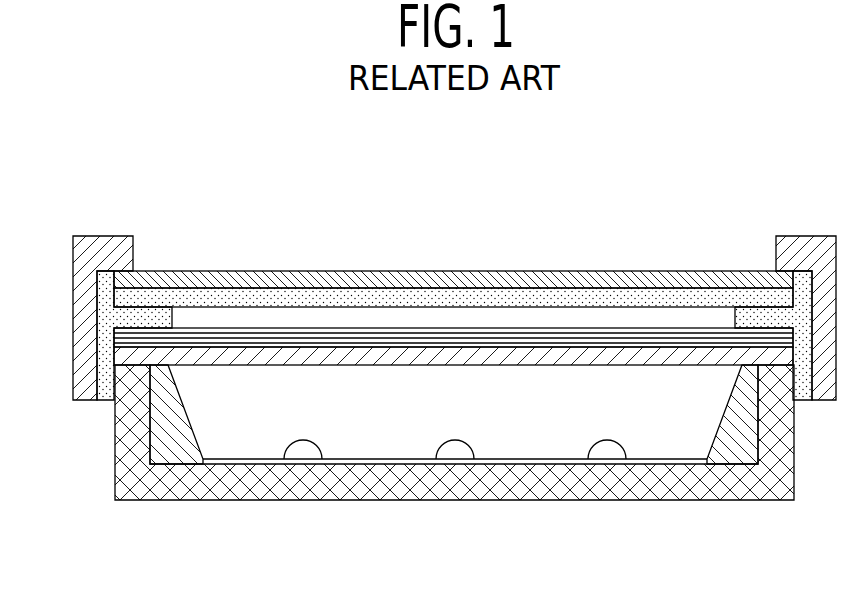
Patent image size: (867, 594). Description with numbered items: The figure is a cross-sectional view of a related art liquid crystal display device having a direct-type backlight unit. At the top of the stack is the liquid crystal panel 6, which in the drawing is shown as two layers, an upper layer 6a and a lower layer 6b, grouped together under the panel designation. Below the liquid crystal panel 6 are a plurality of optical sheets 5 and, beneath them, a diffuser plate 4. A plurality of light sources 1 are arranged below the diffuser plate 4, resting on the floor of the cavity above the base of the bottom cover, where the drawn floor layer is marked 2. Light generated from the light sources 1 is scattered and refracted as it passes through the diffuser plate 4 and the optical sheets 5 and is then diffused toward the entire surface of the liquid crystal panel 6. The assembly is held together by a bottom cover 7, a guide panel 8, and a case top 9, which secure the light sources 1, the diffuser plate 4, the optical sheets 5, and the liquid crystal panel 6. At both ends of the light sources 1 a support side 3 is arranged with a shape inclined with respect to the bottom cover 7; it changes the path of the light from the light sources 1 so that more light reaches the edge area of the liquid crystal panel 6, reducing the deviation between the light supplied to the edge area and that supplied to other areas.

The light source 1 is at (305, 450).
The substrate 2 is at (400, 464).
The support side 3 is at (177, 452).
The diffuser plate 4 is at (518, 350).
The optical sheets 5 is at (590, 342).
The liquid crystal panel 6 is at (453, 231).
The upper substrate of display panel 6a is at (326, 282).
The lower substrate of display panel 6b is at (398, 302).
The bottom cover 7 is at (553, 480).
The guide panel 8 is at (113, 318).
The case top 9 is at (83, 283).